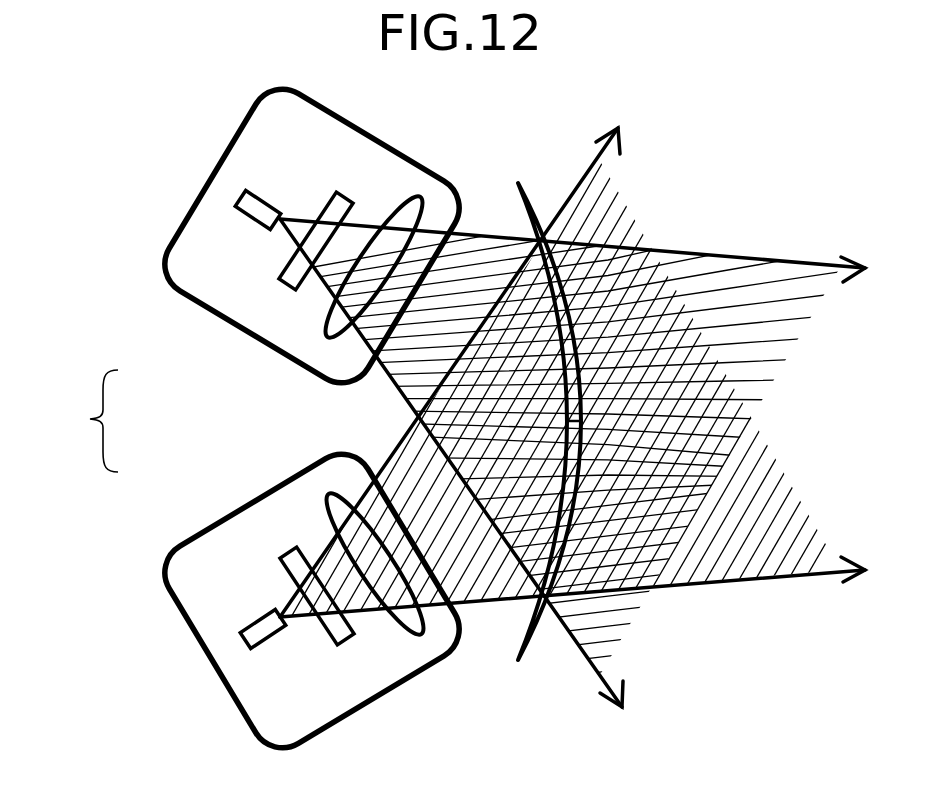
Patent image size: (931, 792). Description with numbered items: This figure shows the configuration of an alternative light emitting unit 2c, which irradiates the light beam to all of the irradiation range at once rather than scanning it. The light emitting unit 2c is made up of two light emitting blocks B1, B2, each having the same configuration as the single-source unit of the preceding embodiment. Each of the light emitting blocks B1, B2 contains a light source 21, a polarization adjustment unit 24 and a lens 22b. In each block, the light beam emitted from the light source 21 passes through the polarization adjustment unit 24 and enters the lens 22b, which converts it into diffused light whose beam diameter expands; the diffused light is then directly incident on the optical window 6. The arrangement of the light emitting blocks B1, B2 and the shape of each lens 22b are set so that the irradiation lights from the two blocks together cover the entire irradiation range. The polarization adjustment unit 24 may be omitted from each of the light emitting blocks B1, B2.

The light emitting unit 2c is at (84, 421).
The light emitting block B1 is at (212, 318).
The light emitting block B2 is at (229, 504).
The light source 21 is at (262, 196).
The polarization adjustment unit 24 is at (288, 269).
The lens 22b is at (325, 324).
The optical window 6 is at (516, 180).